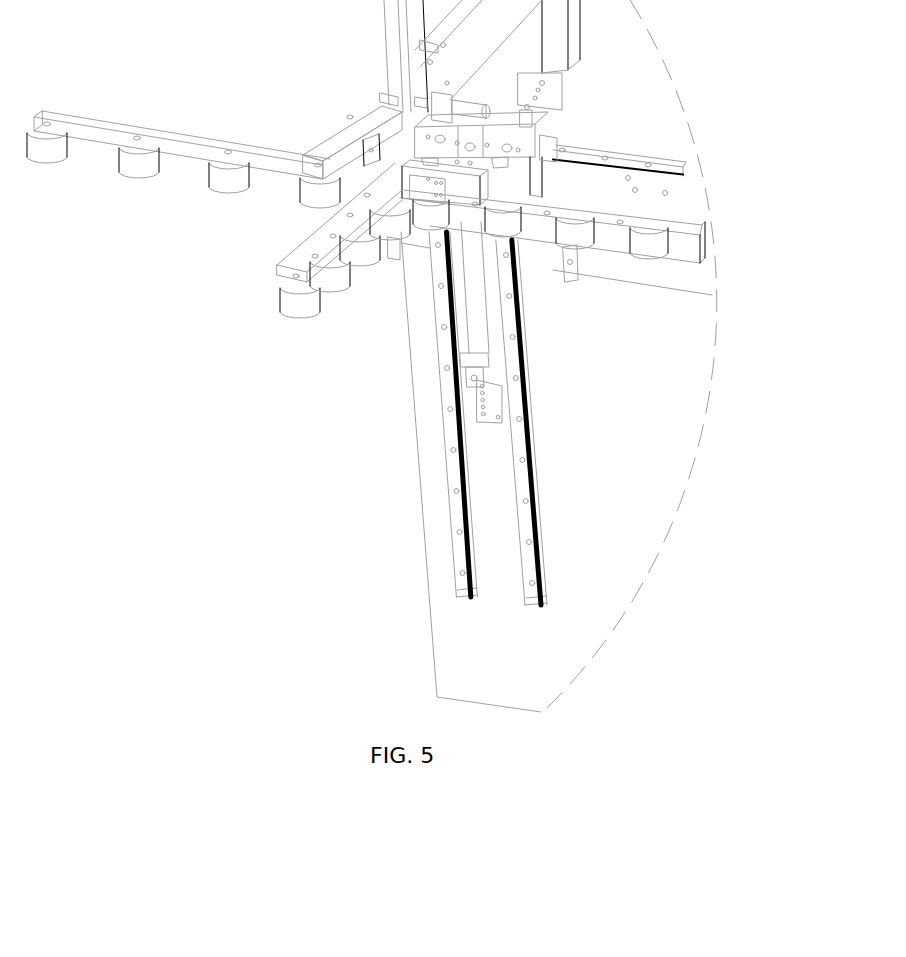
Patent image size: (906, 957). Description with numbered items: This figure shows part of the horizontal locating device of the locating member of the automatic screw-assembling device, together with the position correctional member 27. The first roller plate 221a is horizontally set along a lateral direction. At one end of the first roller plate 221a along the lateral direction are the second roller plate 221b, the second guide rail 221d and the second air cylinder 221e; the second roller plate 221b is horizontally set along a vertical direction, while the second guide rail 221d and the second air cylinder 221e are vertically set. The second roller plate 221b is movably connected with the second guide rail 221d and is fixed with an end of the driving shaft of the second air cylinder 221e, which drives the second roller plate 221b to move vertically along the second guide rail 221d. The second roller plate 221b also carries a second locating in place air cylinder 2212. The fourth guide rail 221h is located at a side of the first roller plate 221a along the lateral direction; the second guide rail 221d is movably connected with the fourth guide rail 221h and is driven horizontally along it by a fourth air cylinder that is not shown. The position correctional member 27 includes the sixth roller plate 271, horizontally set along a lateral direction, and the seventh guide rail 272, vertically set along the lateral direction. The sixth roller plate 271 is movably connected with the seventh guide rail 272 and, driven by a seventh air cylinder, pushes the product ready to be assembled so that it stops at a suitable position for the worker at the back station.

The position correctional member 27 is at (214, 116).
The sixth roller plate 271 is at (200, 143).
The seventh guide rail 272 is at (353, 145).
The first roller plate 221a is at (620, 220).
The second roller plate 221b is at (303, 260).
The fourth guide rail 221h is at (623, 157).
The second locating in place air cylinder 2212 is at (423, 187).
The second guide rail 221d is at (520, 485).
The second air cylinder 221e is at (468, 318).